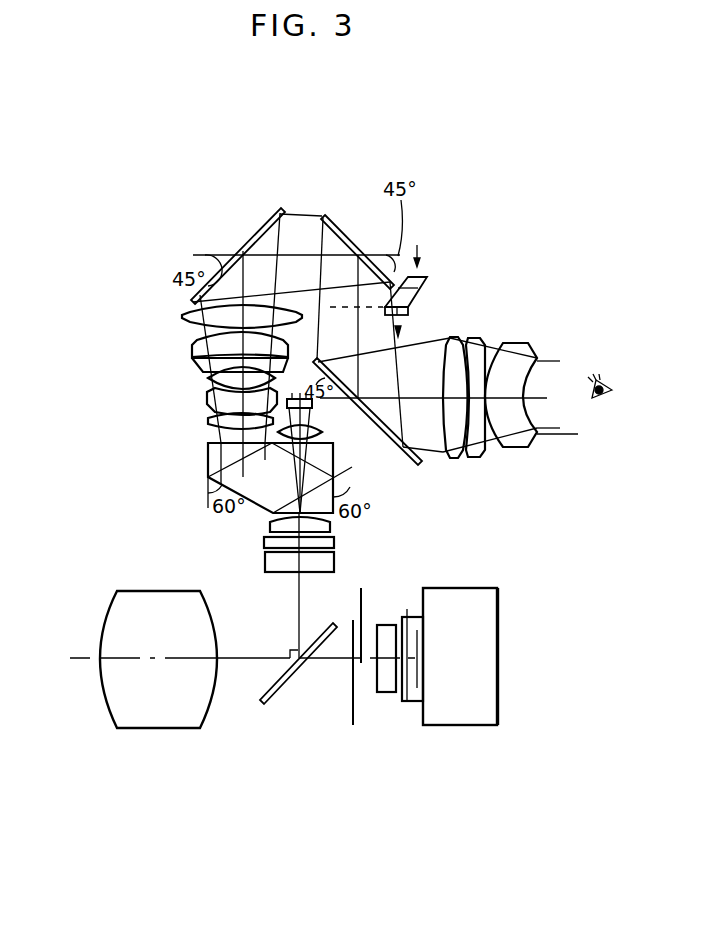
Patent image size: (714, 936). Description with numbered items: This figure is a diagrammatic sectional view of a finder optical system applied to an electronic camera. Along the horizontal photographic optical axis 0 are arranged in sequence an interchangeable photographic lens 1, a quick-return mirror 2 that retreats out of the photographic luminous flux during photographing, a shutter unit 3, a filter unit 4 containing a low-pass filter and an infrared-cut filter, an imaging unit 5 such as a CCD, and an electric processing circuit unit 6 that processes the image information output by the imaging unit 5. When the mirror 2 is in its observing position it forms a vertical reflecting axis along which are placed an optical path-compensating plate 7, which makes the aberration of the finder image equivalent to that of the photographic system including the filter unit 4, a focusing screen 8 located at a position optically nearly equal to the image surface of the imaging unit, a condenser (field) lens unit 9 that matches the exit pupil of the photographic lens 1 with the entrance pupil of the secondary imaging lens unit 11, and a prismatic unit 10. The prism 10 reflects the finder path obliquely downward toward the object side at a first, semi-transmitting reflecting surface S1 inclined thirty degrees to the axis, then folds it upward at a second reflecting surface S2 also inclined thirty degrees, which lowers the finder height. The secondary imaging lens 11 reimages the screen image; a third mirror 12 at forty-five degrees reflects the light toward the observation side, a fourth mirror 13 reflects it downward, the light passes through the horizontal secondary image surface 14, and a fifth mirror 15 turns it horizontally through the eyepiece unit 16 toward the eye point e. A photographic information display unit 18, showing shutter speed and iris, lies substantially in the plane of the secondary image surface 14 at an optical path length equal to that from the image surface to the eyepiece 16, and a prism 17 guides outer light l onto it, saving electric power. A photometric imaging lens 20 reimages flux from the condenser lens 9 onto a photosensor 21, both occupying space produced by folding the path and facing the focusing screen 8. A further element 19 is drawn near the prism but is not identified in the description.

The photographic optical axis 0 is at (70, 660).
The interchangeable photographic lens 1 is at (180, 722).
The quick-return mirror 2 is at (268, 706).
The shutter unit 3 is at (353, 727).
The filter unit 4 is at (385, 694).
The imaging unit 5 is at (408, 703).
The electric processing circuit unit 6 is at (488, 636).
The optical path-compensating plate 7 is at (273, 568).
The focusing screen 8 is at (267, 543).
The condenser lens unit 9 is at (268, 528).
The prismatic unit 10 is at (208, 463).
The secondary imaging lens unit 11 is at (165, 305).
The third reflecting mirror 12 is at (247, 238).
The fourth reflecting mirror 13 is at (352, 232).
The secondary image surface 14 is at (383, 303).
The fifth reflecting mirror 15 is at (417, 466).
The eyepiece unit 16 is at (537, 330).
The prism 17 is at (423, 282).
The photographic information display unit 18 is at (422, 308).
The light beam 19 is at (333, 462).
The photometric imaging lens 20 is at (322, 432).
The photosensor 21 is at (313, 407).
The outer light l is at (420, 252).
The eye point e is at (604, 378).
The first reflecting surface S1 is at (345, 488).
The second reflecting surface S2 is at (252, 507).